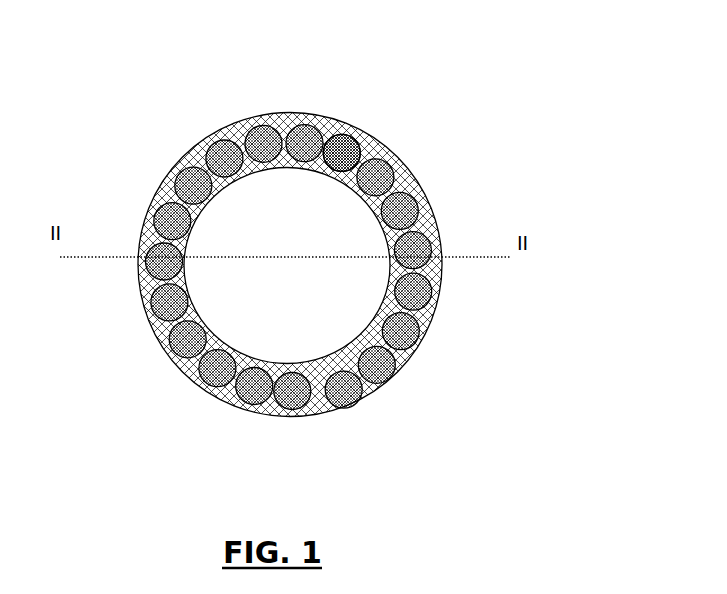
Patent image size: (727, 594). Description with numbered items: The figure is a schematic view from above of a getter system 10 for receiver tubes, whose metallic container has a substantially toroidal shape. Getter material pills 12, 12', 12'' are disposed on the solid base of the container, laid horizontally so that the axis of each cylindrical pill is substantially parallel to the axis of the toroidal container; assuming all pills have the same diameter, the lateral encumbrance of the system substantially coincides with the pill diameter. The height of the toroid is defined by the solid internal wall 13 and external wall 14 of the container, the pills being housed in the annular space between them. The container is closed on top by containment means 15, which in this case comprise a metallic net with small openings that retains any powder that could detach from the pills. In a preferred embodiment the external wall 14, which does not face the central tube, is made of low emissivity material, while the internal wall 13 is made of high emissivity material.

The getter system 10 is at (353, 233).
The getter material pill 12 is at (289, 220).
The getter material pill 12' is at (342, 105).
The getter material pill 12'' is at (397, 134).
The internal wall 13 is at (205, 326).
The external wall 14 is at (175, 366).
The containment means 15 is at (397, 360).